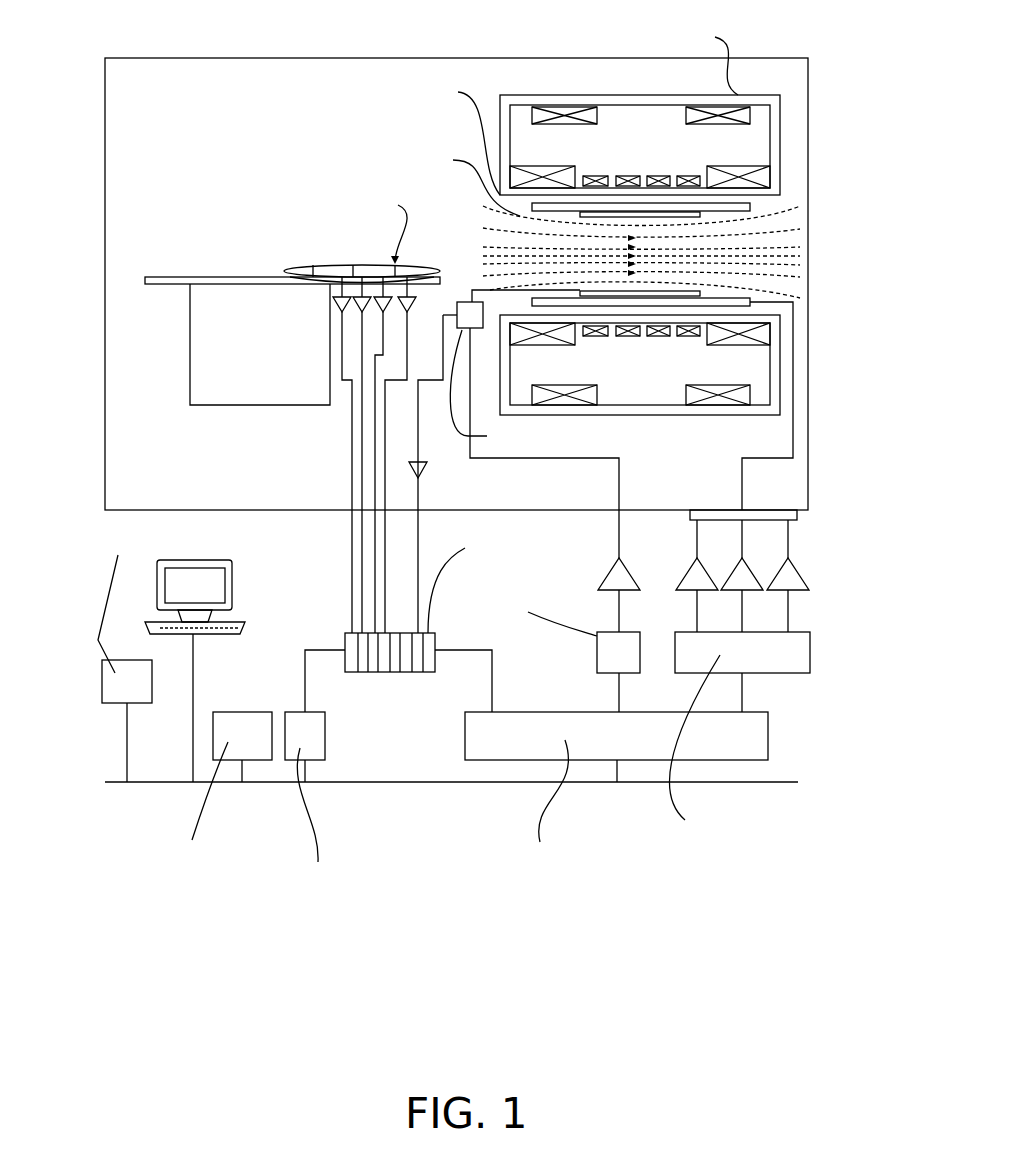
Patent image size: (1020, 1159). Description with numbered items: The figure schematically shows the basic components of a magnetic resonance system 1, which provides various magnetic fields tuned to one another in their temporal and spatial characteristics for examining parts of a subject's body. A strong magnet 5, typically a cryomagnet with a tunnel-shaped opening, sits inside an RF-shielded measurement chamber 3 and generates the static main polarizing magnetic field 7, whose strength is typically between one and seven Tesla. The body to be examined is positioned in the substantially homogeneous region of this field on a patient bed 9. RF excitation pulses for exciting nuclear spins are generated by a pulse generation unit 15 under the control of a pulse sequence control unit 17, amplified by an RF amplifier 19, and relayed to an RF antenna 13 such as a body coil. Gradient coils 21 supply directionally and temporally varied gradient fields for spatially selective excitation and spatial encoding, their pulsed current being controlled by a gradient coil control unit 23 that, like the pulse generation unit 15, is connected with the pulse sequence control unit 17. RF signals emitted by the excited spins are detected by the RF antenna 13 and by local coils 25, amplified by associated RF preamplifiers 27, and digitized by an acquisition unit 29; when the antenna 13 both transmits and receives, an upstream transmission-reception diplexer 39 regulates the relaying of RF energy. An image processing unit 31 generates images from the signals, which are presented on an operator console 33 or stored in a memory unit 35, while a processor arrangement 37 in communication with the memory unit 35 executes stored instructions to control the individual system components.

The magnetic resonance system 1 is at (436, 798).
The RF-shielded measurement chamber 3 is at (403, 58).
The magnet 5 is at (678, 95).
The main magnetic field 7 is at (497, 264).
The patient bed 9 is at (172, 277).
The RF antenna 13 is at (672, 291).
The pulse generation unit 15 is at (597, 649).
The pulse sequence control unit 17 is at (522, 712).
The RF amplifier 19 is at (606, 579).
The gradient coils 21 is at (612, 203).
The gradient coil control unit 23 is at (790, 673).
The local coils 25 is at (308, 270).
The RF preamplifiers 27 is at (414, 314).
The acquisition unit 29 is at (382, 672).
The image processing unit 31 is at (325, 746).
The operator console 33 is at (232, 585).
The memory unit 35 is at (122, 660).
The processor arrangement 37 is at (243, 712).
The transmission-reception diplexer 39 is at (470, 328).